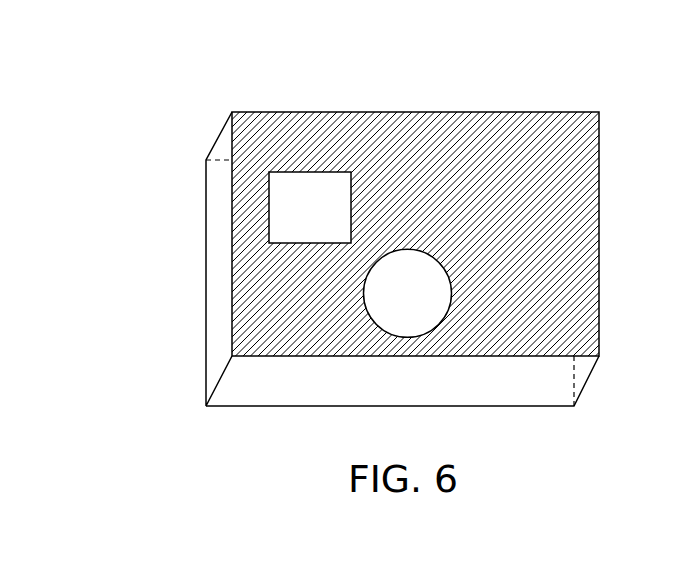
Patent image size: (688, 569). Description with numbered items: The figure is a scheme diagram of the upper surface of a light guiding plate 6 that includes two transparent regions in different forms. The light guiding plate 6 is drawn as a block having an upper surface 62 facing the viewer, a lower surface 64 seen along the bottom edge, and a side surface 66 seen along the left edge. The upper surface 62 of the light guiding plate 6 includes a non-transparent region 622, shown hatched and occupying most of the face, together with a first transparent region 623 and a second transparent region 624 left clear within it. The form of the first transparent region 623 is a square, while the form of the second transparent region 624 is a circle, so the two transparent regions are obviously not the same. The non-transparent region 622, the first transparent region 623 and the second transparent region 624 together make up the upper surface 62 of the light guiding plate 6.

The light guiding plate 6 is at (525, 84).
The upper surface 62 is at (125, 293).
The non-transparent region 622 is at (270, 147).
The first transparent region 623 is at (281, 221).
The second transparent region 624 is at (387, 292).
The lower surface 64 is at (527, 385).
The side surface 66 is at (218, 353).